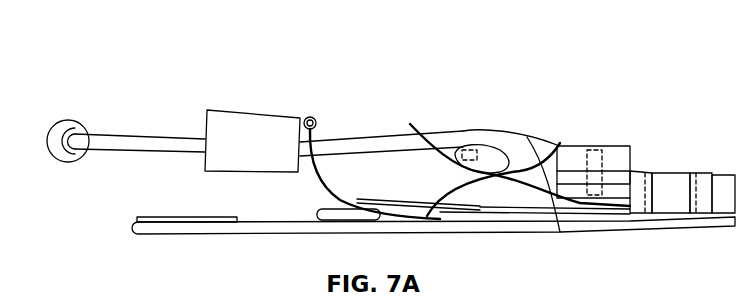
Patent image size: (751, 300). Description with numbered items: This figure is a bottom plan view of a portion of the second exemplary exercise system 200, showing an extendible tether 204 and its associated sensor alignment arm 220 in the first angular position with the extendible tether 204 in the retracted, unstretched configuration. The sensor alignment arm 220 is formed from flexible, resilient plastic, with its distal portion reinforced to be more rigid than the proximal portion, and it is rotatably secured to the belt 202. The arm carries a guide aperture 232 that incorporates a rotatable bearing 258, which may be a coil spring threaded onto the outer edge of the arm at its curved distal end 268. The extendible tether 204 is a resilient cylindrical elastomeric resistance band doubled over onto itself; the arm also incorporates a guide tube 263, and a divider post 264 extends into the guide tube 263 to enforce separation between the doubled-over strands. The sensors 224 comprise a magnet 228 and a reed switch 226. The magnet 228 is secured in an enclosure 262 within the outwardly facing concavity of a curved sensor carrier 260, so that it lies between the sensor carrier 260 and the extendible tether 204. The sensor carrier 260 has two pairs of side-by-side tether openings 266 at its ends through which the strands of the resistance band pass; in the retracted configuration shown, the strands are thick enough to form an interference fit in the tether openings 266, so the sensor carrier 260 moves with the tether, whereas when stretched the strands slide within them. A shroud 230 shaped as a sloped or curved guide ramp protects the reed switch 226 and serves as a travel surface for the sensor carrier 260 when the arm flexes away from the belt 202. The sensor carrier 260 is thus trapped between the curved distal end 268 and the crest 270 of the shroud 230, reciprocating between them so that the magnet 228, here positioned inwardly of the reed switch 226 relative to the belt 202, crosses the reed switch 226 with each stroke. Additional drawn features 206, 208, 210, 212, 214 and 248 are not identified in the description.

The exercise system 200 is at (91, 67).
The belt 202 is at (187, 236).
The extendible tether 204 is at (470, 134).
The strand 206 is at (599, 186).
The end cap 208 is at (726, 173).
The hub body 210 is at (672, 206).
The ring connector 212 is at (63, 114).
The ring 214 is at (64, 163).
The sensor alignment arm 220 is at (332, 196).
The sensor 224 is at (465, 120).
The reed switch 226 is at (415, 222).
The magnet 228 is at (473, 148).
The shroud 230 is at (417, 197).
The guide aperture 232 is at (301, 152).
The band 248 is at (505, 195).
The rotatable bearing 258 is at (307, 117).
The sensor carrier 260 is at (510, 137).
The enclosure 262 is at (436, 132).
The guide tube 263 is at (622, 160).
The divider post 264 is at (601, 148).
The tether opening 266 is at (418, 143).
The distal end 268 is at (297, 127).
The crest 270 is at (490, 160).